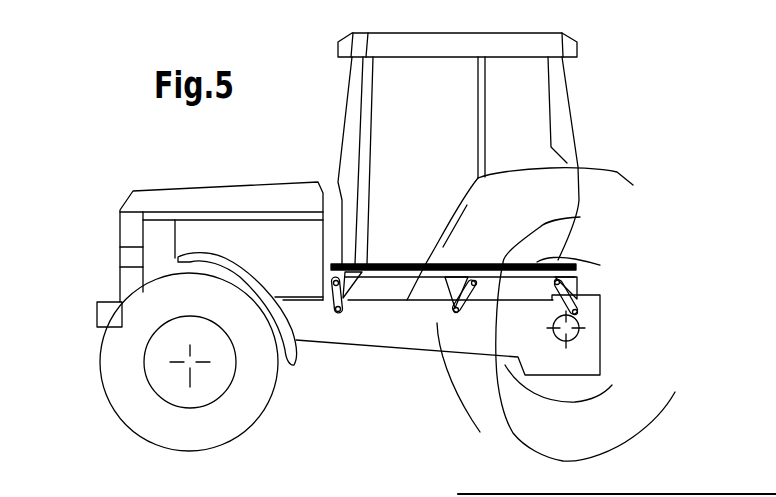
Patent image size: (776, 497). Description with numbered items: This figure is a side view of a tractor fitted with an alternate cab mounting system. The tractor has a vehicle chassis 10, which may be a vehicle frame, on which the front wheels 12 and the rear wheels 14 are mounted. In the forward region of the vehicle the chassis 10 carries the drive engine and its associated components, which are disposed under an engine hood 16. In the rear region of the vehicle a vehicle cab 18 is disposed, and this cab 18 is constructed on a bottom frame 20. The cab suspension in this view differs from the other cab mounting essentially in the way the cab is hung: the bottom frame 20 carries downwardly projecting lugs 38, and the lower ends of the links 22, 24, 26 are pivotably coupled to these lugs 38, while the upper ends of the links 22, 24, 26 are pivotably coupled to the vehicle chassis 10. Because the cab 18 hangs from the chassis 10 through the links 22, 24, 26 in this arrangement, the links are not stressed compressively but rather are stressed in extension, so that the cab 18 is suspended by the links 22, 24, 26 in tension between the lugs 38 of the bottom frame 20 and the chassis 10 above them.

The vehicle chassis 10 is at (482, 340).
The front wheels 12 is at (133, 410).
The rear wheels 14 is at (653, 402).
The engine hood 16 is at (231, 182).
The vehicle cab 18 is at (390, 75).
The bottom frame 20 is at (580, 217).
The link 22 is at (331, 283).
The link 24 is at (470, 310).
The link 26 is at (579, 284).
The downwardly projecting lugs 38 is at (352, 305).